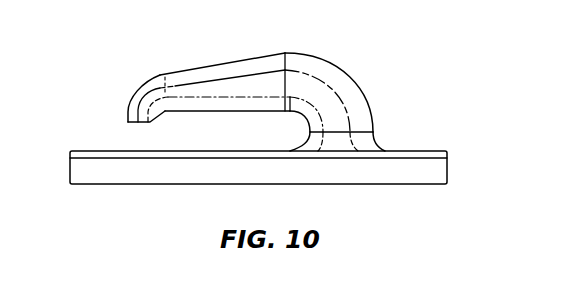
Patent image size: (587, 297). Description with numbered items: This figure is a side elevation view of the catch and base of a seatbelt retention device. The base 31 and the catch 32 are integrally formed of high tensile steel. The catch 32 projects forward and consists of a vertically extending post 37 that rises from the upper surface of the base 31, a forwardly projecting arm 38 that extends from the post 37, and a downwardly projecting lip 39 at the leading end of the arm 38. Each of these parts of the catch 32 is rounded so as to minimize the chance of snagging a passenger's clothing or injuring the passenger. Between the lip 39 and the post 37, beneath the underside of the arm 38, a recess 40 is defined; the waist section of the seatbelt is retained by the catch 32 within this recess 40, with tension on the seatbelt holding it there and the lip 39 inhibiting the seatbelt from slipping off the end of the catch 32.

The base 31 is at (90, 168).
The catch 32 is at (268, 129).
The post 37 is at (356, 100).
The arm 38 is at (217, 76).
The lip 39 is at (140, 115).
The recess 40 is at (235, 128).